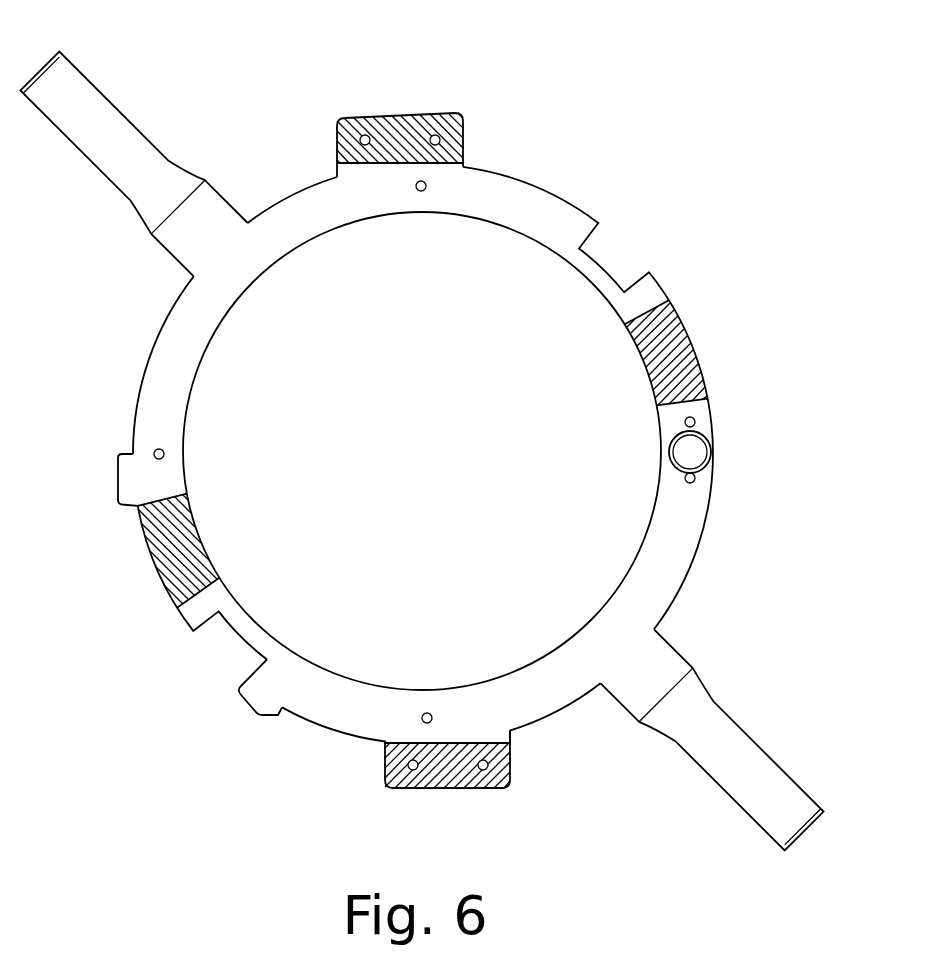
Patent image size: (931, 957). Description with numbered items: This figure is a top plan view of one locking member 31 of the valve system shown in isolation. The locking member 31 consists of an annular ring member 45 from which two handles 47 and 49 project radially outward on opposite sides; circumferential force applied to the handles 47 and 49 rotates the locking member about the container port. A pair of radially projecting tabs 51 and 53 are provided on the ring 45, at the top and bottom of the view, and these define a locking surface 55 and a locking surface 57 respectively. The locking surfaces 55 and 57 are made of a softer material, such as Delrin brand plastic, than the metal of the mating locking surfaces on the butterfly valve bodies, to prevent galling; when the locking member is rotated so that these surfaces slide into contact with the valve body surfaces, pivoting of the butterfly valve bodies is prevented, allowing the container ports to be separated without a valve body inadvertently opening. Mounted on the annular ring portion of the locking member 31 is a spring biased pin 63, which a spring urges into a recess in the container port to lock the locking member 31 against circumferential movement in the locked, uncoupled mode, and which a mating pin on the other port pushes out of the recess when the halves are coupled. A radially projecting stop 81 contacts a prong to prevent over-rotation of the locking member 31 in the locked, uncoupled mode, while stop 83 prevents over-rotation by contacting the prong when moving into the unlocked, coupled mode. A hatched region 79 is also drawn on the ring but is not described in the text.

The locking member 31 is at (662, 50).
The annular ring member 45 is at (168, 353).
The handle 47 is at (80, 131).
The handle 49 is at (747, 791).
The radially projecting tab 51 is at (454, 115).
The radially projecting tab 53 is at (494, 787).
The locking surface 55 is at (405, 118).
The locking surface 57 is at (462, 777).
The spring biased pin 63 is at (693, 455).
The hatched clamp segment 79 is at (158, 570).
The radially projecting stop 81 is at (258, 712).
The stop 83 is at (130, 492).